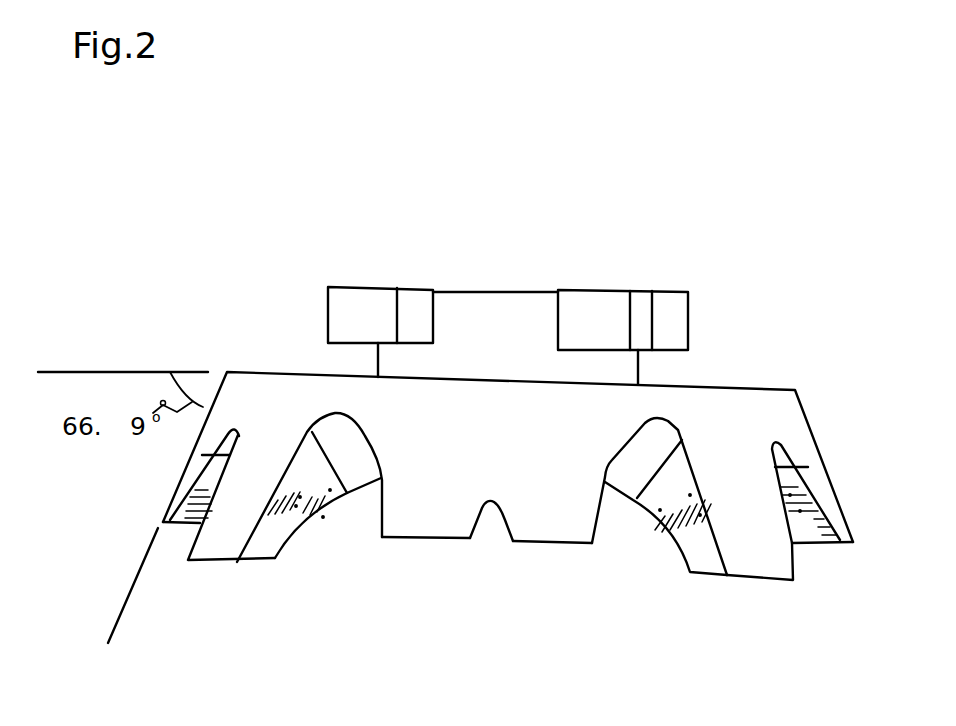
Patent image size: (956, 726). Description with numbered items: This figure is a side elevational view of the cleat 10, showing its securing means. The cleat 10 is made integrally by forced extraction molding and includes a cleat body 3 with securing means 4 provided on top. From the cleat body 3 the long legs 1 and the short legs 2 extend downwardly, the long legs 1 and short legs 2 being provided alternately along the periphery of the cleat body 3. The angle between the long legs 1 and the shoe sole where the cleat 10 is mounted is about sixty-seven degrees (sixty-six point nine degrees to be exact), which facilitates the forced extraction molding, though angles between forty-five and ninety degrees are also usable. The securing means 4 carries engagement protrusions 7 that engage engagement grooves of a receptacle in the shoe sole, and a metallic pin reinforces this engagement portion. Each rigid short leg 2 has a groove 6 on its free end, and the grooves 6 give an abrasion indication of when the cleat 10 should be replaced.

The long legs 1 is at (762, 543).
The short legs 2 is at (547, 507).
The cleat body 3 is at (758, 413).
The securing means 4 is at (485, 318).
The groove 6 is at (477, 527).
The engagement protrusions 7 is at (370, 305).
The cleat 10 is at (497, 272).